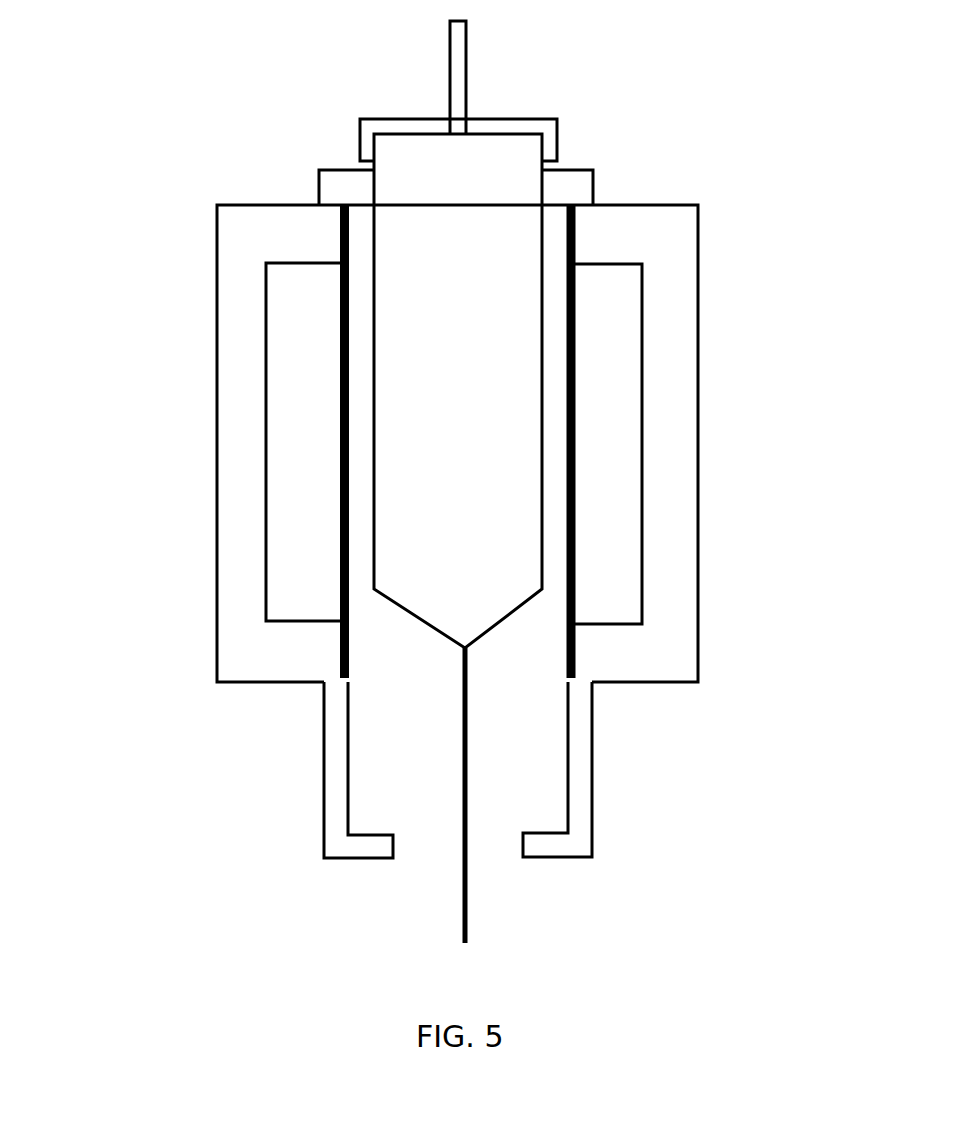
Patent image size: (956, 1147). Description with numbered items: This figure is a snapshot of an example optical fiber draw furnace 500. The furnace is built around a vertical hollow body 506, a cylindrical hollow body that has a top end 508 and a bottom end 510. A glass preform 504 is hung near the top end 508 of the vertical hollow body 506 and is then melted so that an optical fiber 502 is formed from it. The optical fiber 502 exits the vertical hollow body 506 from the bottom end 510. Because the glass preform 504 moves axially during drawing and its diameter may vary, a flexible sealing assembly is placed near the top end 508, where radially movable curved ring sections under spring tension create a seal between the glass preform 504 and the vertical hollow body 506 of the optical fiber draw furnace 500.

The optical fiber draw furnace 500 is at (243, 72).
The optical fiber 502 is at (467, 891).
The glass preform 504 is at (500, 170).
The vertical hollow body 506 is at (555, 254).
The top end 508 is at (367, 213).
The bottom end 510 is at (383, 812).